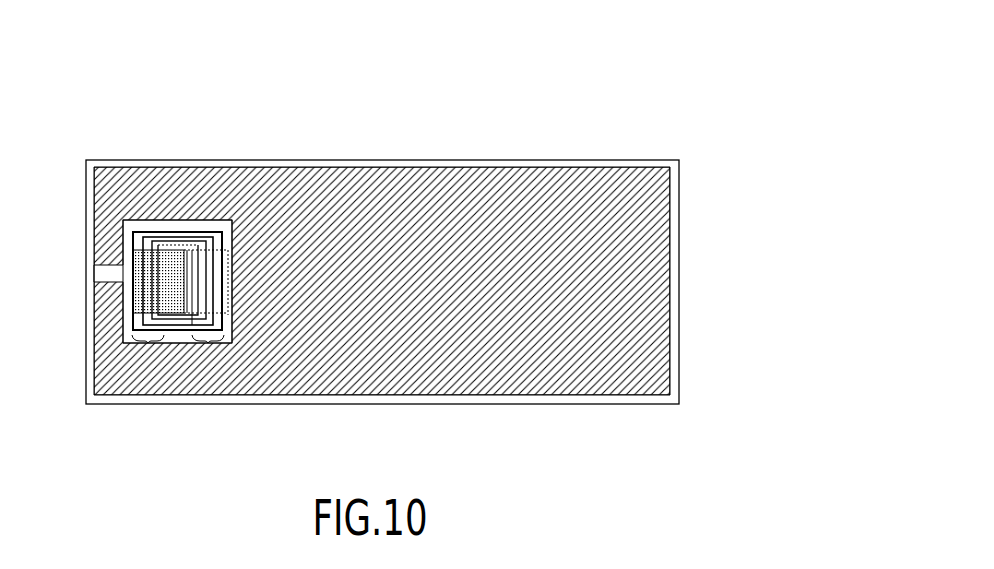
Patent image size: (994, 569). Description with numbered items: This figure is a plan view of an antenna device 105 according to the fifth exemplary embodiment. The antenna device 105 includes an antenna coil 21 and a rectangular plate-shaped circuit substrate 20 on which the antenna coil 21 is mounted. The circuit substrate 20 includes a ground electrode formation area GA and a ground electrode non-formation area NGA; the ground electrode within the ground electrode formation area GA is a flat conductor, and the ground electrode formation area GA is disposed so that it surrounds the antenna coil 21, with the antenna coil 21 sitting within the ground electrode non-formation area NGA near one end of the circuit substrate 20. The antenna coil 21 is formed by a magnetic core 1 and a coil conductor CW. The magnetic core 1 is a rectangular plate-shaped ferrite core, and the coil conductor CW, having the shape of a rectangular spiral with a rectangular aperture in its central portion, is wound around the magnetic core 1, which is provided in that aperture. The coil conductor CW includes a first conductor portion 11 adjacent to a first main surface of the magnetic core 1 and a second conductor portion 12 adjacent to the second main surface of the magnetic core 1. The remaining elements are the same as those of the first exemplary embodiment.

The antenna device 105 is at (631, 61).
The circuit substrate 20 is at (679, 160).
The ground electrode formation area GA is at (345, 198).
The ground electrode non-formation area NGA is at (156, 225).
The antenna coil 21 is at (129, 239).
The coil conductor CW is at (180, 243).
The magnetic core 1 is at (133, 272).
The first conductor portion 11 is at (147, 345).
The second conductor portion 12 is at (208, 345).